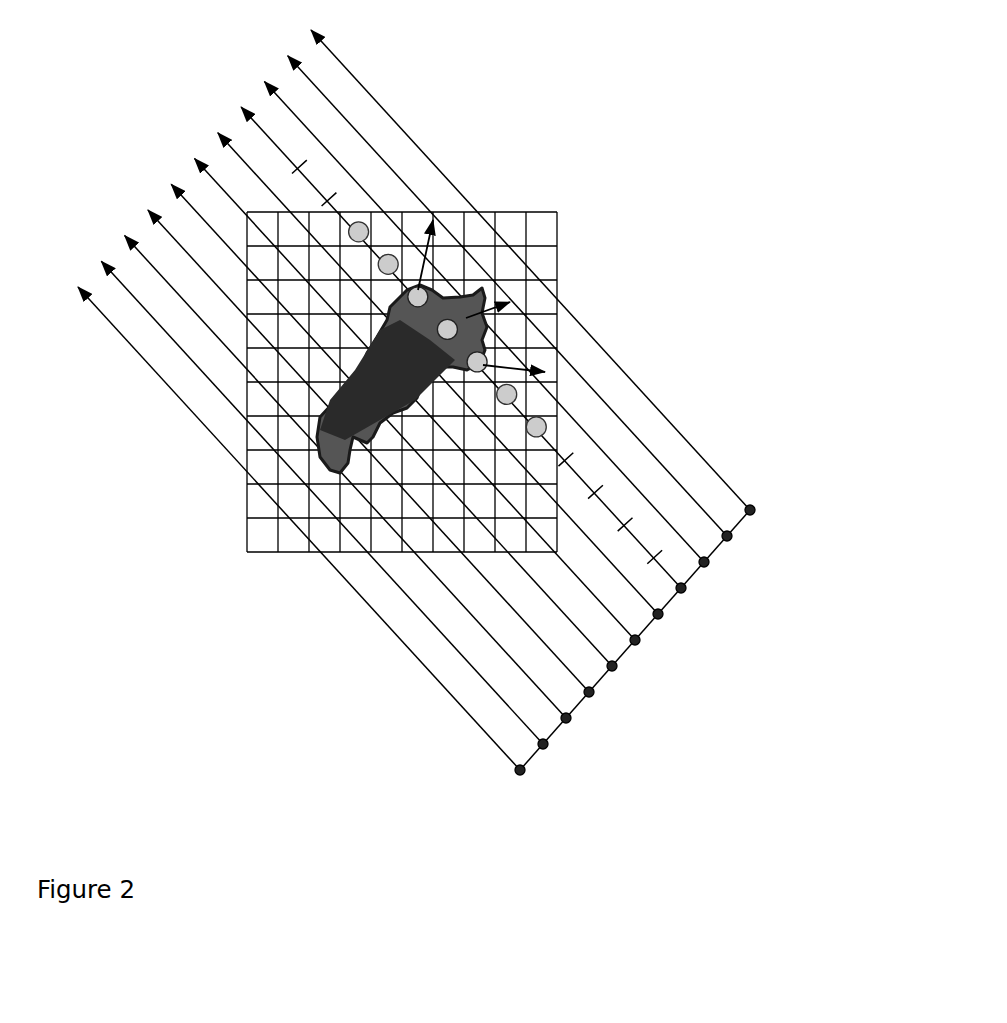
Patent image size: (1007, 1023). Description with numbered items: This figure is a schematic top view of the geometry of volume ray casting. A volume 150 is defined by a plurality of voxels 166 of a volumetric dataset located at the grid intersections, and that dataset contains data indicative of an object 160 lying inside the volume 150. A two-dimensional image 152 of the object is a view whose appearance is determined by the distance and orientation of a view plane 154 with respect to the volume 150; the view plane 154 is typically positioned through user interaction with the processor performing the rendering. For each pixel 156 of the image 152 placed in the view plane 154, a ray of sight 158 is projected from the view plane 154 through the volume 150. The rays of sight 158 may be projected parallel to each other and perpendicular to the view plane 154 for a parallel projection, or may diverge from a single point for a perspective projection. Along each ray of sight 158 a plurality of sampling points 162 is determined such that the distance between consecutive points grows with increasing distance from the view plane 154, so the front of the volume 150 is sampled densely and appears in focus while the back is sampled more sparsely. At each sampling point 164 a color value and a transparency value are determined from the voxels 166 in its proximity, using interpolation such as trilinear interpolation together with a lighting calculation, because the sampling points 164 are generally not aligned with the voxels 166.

The volume 150 is at (560, 240).
The 2D image 152 is at (623, 655).
The view plane 154 is at (758, 502).
The pixel 156 is at (683, 593).
The ray of sight 158 is at (413, 653).
The object 160 is at (308, 456).
The sampling points 162 is at (657, 552).
The sampling point 164 is at (557, 397).
The voxels 166 is at (498, 237).